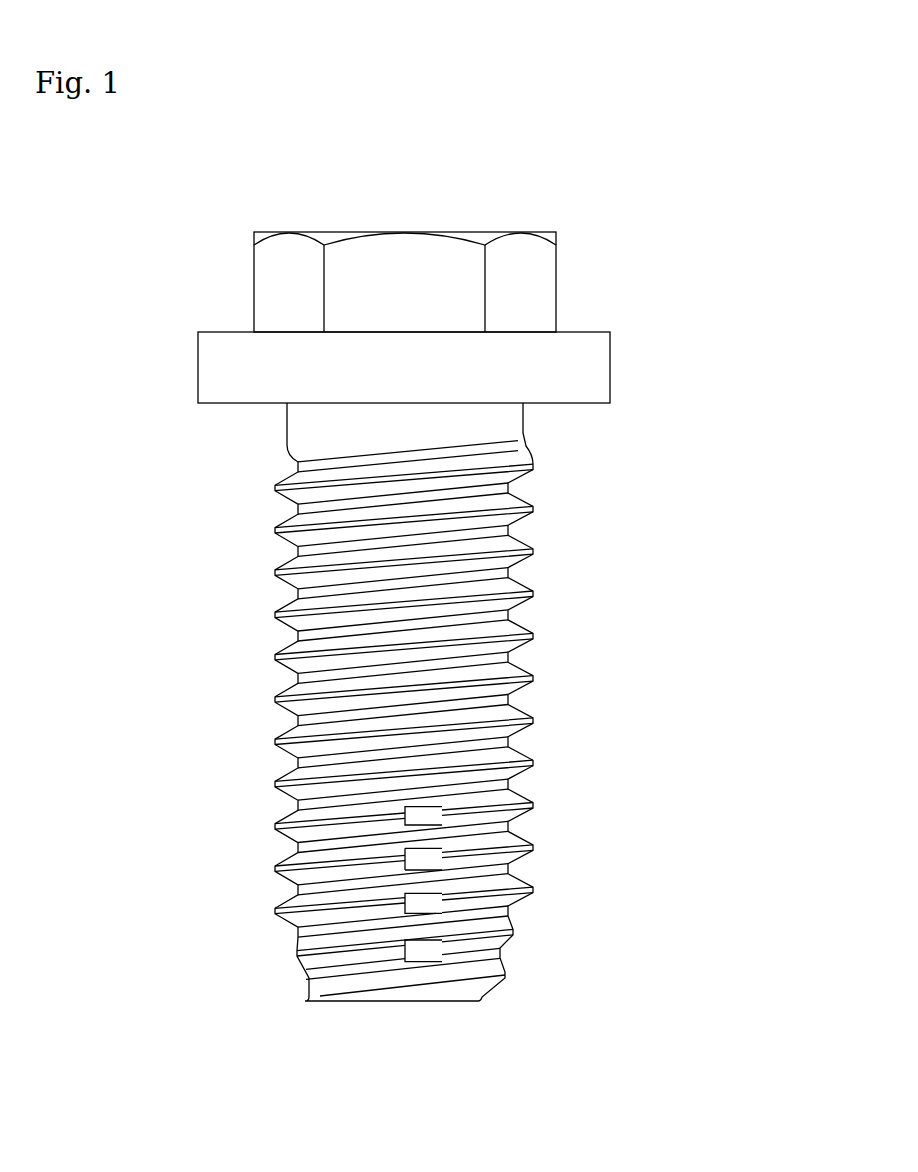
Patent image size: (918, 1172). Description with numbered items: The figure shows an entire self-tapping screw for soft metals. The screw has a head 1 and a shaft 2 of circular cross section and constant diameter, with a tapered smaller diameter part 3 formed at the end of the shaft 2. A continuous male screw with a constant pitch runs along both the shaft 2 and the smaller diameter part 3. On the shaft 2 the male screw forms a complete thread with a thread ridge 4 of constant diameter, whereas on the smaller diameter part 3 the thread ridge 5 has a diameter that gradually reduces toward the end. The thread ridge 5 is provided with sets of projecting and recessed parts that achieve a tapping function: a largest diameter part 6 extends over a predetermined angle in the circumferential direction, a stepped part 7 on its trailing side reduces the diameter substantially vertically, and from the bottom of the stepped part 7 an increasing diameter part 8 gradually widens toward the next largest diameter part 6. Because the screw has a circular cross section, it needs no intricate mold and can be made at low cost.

The head 1 is at (532, 289).
The shaft 2 is at (601, 570).
The smaller diameter part 3 is at (581, 944).
The thread ridge 4 is at (277, 572).
The thread ridge 5 is at (277, 910).
The largest diameter part 6 is at (533, 848).
The stepped part 7 is at (405, 858).
The increasing diameter part 8 is at (440, 858).